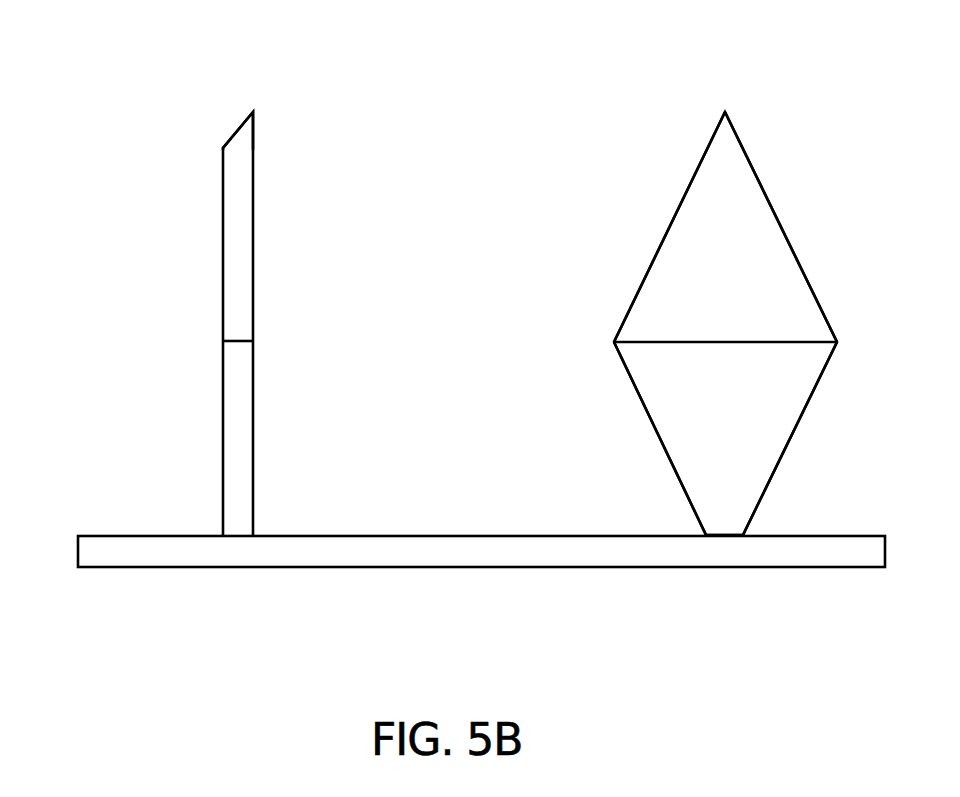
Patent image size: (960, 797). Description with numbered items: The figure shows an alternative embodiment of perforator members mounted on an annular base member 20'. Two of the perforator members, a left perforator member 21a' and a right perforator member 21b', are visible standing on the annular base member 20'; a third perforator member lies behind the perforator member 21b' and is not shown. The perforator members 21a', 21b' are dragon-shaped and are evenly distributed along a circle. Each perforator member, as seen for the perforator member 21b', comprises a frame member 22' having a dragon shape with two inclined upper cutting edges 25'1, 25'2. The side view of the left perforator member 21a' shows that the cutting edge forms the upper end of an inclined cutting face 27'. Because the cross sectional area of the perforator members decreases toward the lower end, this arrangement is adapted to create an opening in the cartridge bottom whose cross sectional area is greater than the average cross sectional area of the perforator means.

The annular base member 20' is at (481, 583).
The perforator member 21a' is at (150, 324).
The cutting face 27' is at (232, 77).
The perforator member 21b' is at (644, 323).
The upper cutting edge 25'1 is at (625, 227).
The upper cutting edge 25'2 is at (823, 227).
The frame member 22' is at (768, 438).